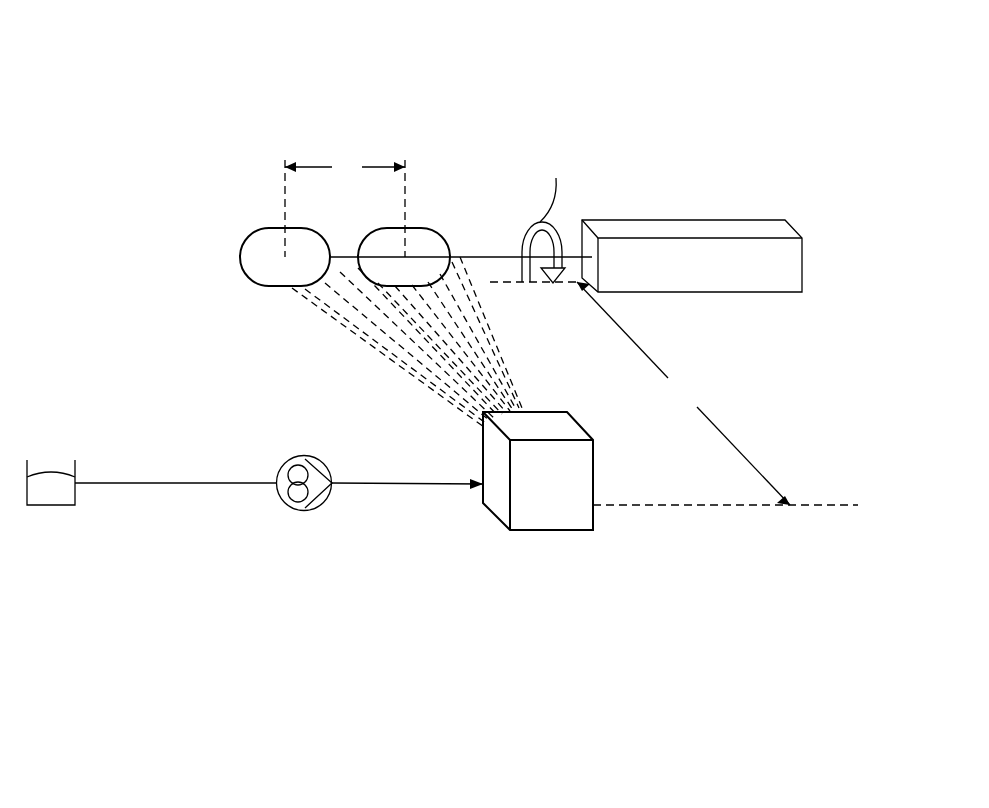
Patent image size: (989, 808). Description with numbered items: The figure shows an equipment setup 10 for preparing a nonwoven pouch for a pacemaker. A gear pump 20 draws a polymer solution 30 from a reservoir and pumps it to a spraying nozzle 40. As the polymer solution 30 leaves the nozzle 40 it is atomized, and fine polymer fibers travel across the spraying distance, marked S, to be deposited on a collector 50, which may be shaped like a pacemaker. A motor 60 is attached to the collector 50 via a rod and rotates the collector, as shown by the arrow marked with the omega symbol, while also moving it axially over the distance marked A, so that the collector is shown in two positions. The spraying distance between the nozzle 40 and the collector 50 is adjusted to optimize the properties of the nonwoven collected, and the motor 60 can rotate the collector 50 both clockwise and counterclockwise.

The equipment setup 10 is at (126, 57).
The gear pump 20 is at (305, 512).
The polymer solution 30 is at (50, 507).
The spraying nozzle 40 is at (553, 490).
The collector 50 is at (415, 240).
The motor 60 is at (716, 279).